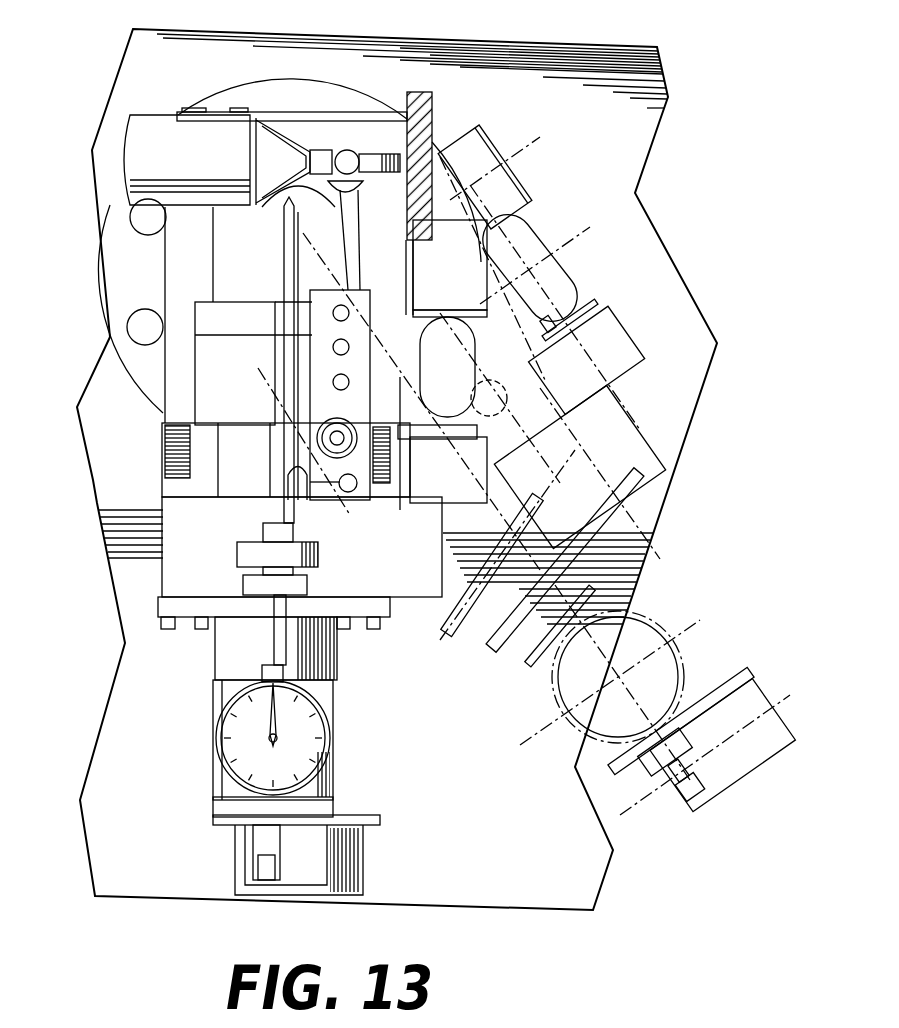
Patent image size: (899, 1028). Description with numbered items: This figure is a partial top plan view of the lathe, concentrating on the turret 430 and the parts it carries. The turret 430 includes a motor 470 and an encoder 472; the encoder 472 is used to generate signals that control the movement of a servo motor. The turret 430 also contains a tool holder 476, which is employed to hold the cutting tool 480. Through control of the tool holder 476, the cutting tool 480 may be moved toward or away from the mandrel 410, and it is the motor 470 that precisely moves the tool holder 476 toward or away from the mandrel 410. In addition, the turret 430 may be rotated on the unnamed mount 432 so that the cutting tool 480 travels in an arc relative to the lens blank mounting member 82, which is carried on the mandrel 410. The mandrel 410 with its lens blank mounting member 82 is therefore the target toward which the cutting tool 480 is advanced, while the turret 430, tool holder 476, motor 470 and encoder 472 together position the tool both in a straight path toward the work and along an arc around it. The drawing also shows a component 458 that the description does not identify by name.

The lens blank mounting member 82 is at (350, 178).
The mandrel 410 is at (277, 147).
The mounting plate 458 is at (432, 117).
The turret rotation mount 432 is at (115, 248).
The cutting tool 480 is at (312, 186).
The tool holder 476 is at (213, 308).
The motor 470 is at (343, 657).
The turret 430 is at (213, 790).
The encoder 472 is at (368, 852).